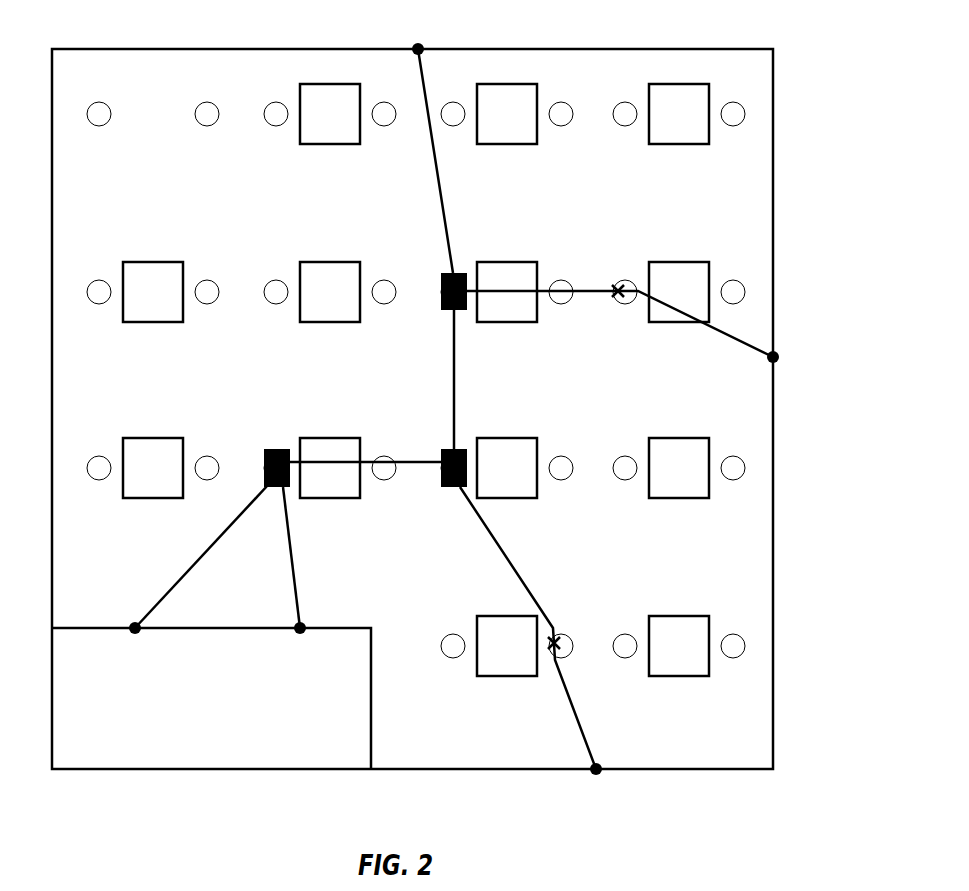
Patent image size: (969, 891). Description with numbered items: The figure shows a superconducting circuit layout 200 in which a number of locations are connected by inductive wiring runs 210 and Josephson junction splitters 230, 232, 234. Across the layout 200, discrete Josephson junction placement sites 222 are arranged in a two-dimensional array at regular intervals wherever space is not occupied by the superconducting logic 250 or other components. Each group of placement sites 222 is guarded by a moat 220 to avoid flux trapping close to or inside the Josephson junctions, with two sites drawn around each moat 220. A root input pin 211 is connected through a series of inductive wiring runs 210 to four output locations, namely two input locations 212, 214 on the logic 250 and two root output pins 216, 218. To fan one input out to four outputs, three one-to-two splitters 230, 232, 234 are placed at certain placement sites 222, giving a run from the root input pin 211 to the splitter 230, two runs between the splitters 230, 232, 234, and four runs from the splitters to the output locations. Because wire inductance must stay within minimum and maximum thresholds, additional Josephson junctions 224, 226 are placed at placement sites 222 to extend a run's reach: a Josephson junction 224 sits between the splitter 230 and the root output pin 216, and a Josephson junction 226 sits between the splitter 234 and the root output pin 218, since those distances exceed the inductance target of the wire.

The superconducting circuit layout 200 is at (123, 49).
The inductive wiring run 210 is at (440, 192).
The root input pin 211 is at (418, 49).
The input location 212 is at (135, 628).
The input location 214 is at (300, 628).
The root output pin 216 is at (773, 357).
The root output pin 218 is at (596, 769).
The moat 220 is at (152, 262).
The Josephson junction placement site 222 is at (100, 280).
The Josephson junction 224 is at (618, 285).
The Josephson junction 226 is at (565, 645).
The Josephson junction splitter 230 is at (445, 273).
The Josephson junction splitter 232 is at (280, 449).
The Josephson junction splitter 234 is at (445, 452).
The superconducting logic 250 is at (228, 723).